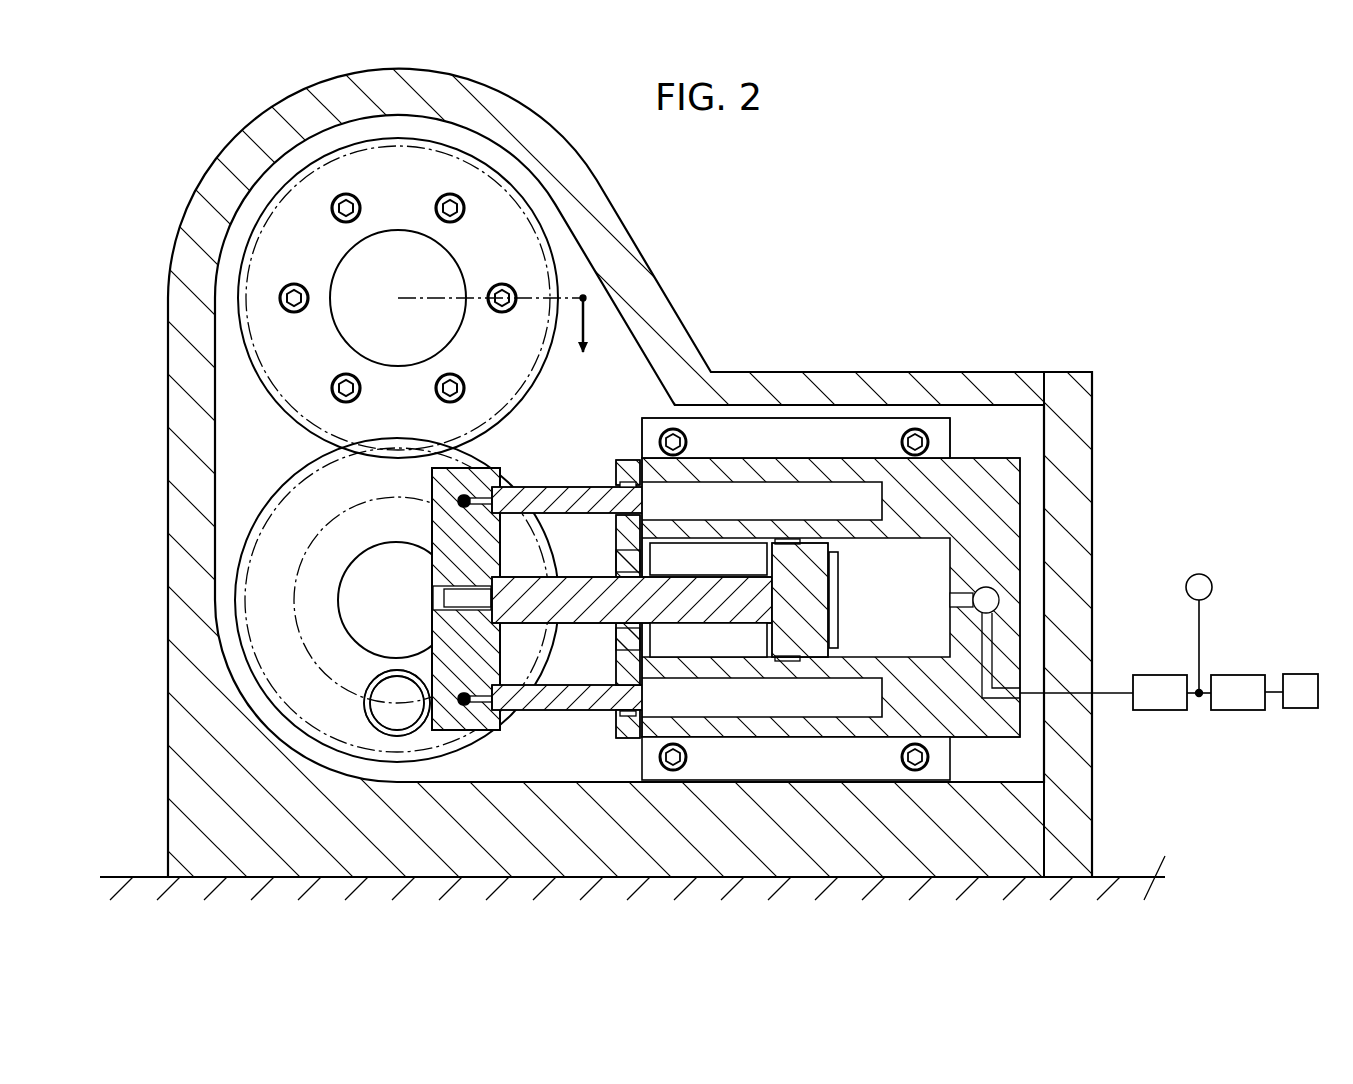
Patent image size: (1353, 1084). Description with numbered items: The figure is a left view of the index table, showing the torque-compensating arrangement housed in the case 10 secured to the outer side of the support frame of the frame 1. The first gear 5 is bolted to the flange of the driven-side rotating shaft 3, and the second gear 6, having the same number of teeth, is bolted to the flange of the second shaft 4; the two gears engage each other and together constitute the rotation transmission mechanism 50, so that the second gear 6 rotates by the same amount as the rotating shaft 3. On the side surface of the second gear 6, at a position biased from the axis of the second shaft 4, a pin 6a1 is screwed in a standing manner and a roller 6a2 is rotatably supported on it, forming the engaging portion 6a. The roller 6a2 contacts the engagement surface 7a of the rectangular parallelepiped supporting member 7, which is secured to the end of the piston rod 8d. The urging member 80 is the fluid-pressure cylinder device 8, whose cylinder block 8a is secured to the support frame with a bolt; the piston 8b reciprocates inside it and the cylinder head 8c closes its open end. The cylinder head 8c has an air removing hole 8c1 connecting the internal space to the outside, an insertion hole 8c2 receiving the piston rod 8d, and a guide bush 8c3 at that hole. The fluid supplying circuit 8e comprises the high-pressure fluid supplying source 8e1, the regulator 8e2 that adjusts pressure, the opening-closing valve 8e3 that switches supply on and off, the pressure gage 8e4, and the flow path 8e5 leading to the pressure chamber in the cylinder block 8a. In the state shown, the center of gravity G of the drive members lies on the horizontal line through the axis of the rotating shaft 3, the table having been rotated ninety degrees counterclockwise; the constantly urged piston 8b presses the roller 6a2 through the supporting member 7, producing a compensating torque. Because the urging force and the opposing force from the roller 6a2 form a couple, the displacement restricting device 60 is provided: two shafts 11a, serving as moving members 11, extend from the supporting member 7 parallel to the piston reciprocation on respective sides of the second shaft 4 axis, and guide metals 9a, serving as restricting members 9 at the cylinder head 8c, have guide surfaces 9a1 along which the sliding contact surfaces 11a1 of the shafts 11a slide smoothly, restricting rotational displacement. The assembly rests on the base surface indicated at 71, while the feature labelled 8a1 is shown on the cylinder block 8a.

The frame 1 is at (1013, 422).
The rotating shaft 3 is at (334, 256).
The second shaft 4 is at (334, 584).
The first gear 5 is at (271, 350).
The second gear 6 is at (280, 495).
The rotation transmission mechanism 50 is at (130, 327).
The supporting member 7 is at (430, 657).
The engagement surface 7a is at (430, 661).
The engaging portion 6a is at (112, 688).
The pin 6a1 is at (390, 693).
The roller 6a2 is at (367, 727).
The fluid-pressure cylinder device 8 is at (834, 452).
The cylinder block 8a is at (880, 472).
The flange plate 8a1 is at (855, 427).
The piston 8b is at (803, 648).
The cylinder head 8c is at (630, 484).
The air removing hole 8c1 is at (607, 485).
The insertion hole 8c2 is at (655, 606).
The guide bush 8c3 is at (540, 708).
The piston rod 8d is at (716, 540).
The fluid supplying circuit 8e is at (1248, 660).
The high-pressure fluid supplying source 8e1 is at (1303, 702).
The regulator 8e2 is at (1243, 705).
The opening-closing valve 8e3 is at (1183, 707).
The pressure gage 8e4 is at (1205, 582).
The flow path 8e5 is at (989, 664).
The restricting members 9 is at (590, 396).
The guide metals 9a is at (603, 487).
The guide surfaces 9a1 is at (652, 482).
The case 10 is at (618, 238).
The moving members 11 is at (762, 478).
The shafts 11a is at (530, 487).
The sliding contact surfaces 11a1 is at (511, 487).
The displacement restricting device 60 is at (628, 350).
The base 71 is at (1128, 877).
The urging member 80 is at (892, 316).
The center of gravity G is at (584, 296).